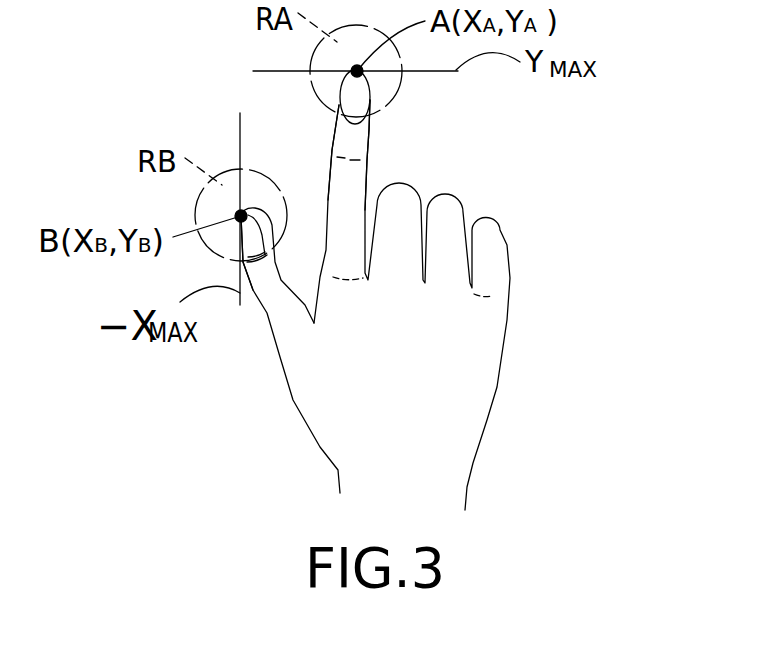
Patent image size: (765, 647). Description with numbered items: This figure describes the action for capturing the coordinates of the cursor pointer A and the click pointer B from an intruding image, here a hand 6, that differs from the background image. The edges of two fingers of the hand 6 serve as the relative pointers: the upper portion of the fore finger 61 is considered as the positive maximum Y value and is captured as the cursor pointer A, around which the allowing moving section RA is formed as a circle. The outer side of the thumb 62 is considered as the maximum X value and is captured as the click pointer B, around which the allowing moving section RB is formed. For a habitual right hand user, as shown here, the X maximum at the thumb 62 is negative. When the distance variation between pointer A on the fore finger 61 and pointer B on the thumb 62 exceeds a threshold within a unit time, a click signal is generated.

The hand 6 is at (490, 410).
The fore finger 61 is at (357, 140).
The thumb 62 is at (267, 297).